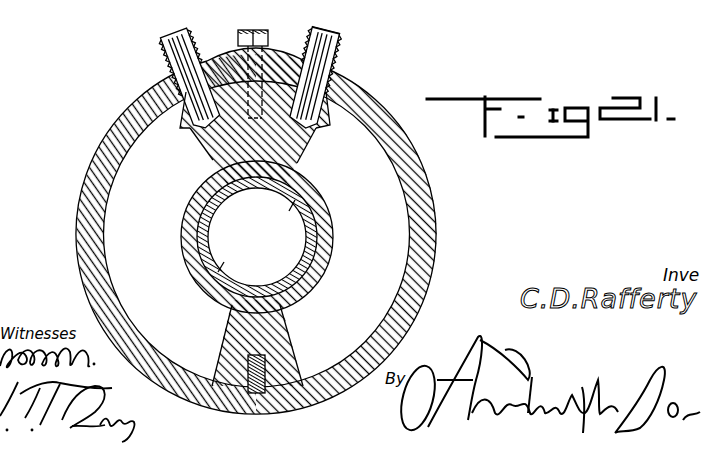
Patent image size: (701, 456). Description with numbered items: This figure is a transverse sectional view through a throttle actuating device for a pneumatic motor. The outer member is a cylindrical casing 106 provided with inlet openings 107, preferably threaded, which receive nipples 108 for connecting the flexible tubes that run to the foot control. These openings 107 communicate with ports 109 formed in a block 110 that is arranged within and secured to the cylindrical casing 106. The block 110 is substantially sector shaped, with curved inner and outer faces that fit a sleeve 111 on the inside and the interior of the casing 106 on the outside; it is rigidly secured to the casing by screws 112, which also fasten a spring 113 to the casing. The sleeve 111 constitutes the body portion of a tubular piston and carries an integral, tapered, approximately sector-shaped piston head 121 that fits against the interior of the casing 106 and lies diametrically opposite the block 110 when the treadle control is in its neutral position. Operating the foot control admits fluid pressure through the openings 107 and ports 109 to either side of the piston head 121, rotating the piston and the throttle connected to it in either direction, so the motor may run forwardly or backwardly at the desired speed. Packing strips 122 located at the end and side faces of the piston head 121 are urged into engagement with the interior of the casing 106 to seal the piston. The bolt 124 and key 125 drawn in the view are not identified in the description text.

The cylindrical casing 106 is at (373, 97).
The inlet openings 107 is at (340, 78).
The nipples 108 is at (316, 27).
The ports 109 is at (192, 124).
The block 110 is at (213, 162).
The sleeve 111 is at (325, 252).
The screws 112 is at (336, 19).
The spring 113 is at (277, 35).
The piston head 121 is at (360, 341).
The packing strips 122 is at (166, 33).
The bolt 124 is at (256, 30).
The key 125 is at (263, 396).